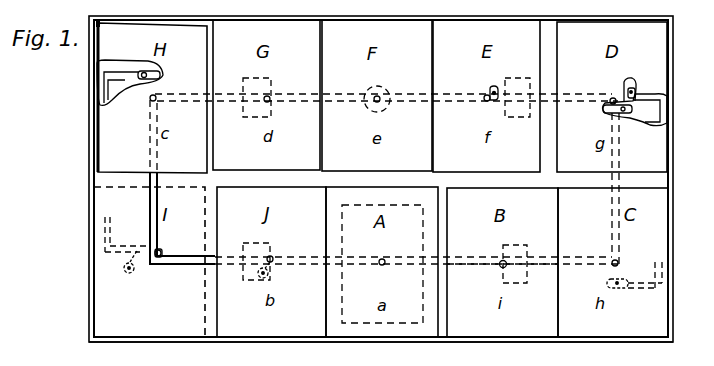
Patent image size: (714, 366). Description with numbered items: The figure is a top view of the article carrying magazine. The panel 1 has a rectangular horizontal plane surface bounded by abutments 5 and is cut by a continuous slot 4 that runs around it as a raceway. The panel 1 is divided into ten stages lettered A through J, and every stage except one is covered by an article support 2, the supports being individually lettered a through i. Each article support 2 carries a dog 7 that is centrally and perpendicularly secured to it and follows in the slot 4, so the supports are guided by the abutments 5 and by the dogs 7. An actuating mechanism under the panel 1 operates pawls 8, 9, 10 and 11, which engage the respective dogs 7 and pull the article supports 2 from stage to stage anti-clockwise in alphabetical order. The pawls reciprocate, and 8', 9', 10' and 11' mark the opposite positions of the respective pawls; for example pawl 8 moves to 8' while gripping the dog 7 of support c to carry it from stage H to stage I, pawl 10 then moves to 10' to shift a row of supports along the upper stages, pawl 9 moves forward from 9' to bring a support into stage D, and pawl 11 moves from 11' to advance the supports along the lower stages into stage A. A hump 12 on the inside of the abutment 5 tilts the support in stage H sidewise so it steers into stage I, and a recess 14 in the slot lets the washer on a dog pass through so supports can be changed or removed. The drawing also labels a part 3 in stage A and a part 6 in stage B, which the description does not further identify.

The panel 1 is at (369, 179).
The article support 2 is at (120, 150).
The conduit circuit 3 is at (343, 288).
The slot 4 is at (484, 273).
The abutments 5 is at (603, 343).
The outlet box 6 is at (521, 244).
The dog 7 is at (501, 260).
The pawl 8 is at (158, 76).
The opposite position of pawl 8 8' is at (142, 237).
The pawl 9 is at (607, 116).
The opposite position of pawl 9 9' is at (624, 277).
The pawl 10 is at (641, 84).
The opposite position of pawl 10 10' is at (500, 92).
The pawl 11 is at (267, 265).
The opposite position of pawl 11 11' is at (140, 269).
The hump 12 is at (103, 24).
The recess 14 is at (383, 87).